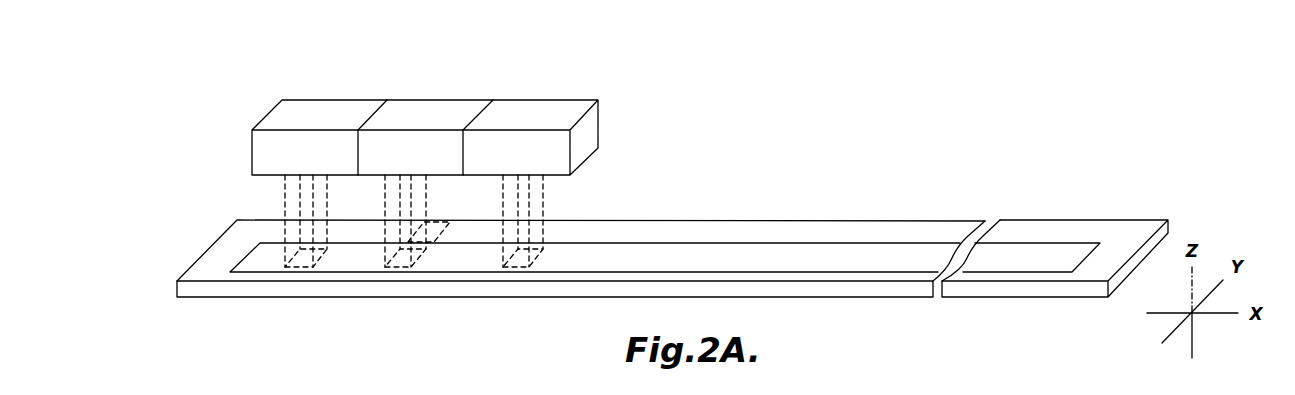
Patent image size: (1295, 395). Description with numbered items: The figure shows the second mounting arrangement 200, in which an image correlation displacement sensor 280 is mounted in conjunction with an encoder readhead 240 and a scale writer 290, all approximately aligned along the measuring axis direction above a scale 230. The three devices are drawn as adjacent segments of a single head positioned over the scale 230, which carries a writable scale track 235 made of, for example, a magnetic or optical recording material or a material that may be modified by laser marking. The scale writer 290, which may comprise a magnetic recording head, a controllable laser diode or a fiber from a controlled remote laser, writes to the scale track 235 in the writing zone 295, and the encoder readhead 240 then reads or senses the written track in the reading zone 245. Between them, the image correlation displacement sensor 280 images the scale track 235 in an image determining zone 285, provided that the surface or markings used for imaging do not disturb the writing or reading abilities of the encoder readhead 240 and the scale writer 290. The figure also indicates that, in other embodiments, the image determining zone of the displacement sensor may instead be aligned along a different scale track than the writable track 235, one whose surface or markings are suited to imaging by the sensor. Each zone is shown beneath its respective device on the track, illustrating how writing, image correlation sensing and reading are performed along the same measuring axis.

The second mounting arrangement 200 is at (1096, 154).
The scale 230 is at (303, 283).
The writable scale track 235 is at (890, 265).
The encoder readhead 240 is at (297, 101).
The image correlation displacement sensor 280 is at (402, 101).
The scale writer 290 is at (515, 101).
The reading zone 245 is at (318, 255).
The image determining zone 285 is at (401, 262).
The writing zone 295 is at (530, 255).